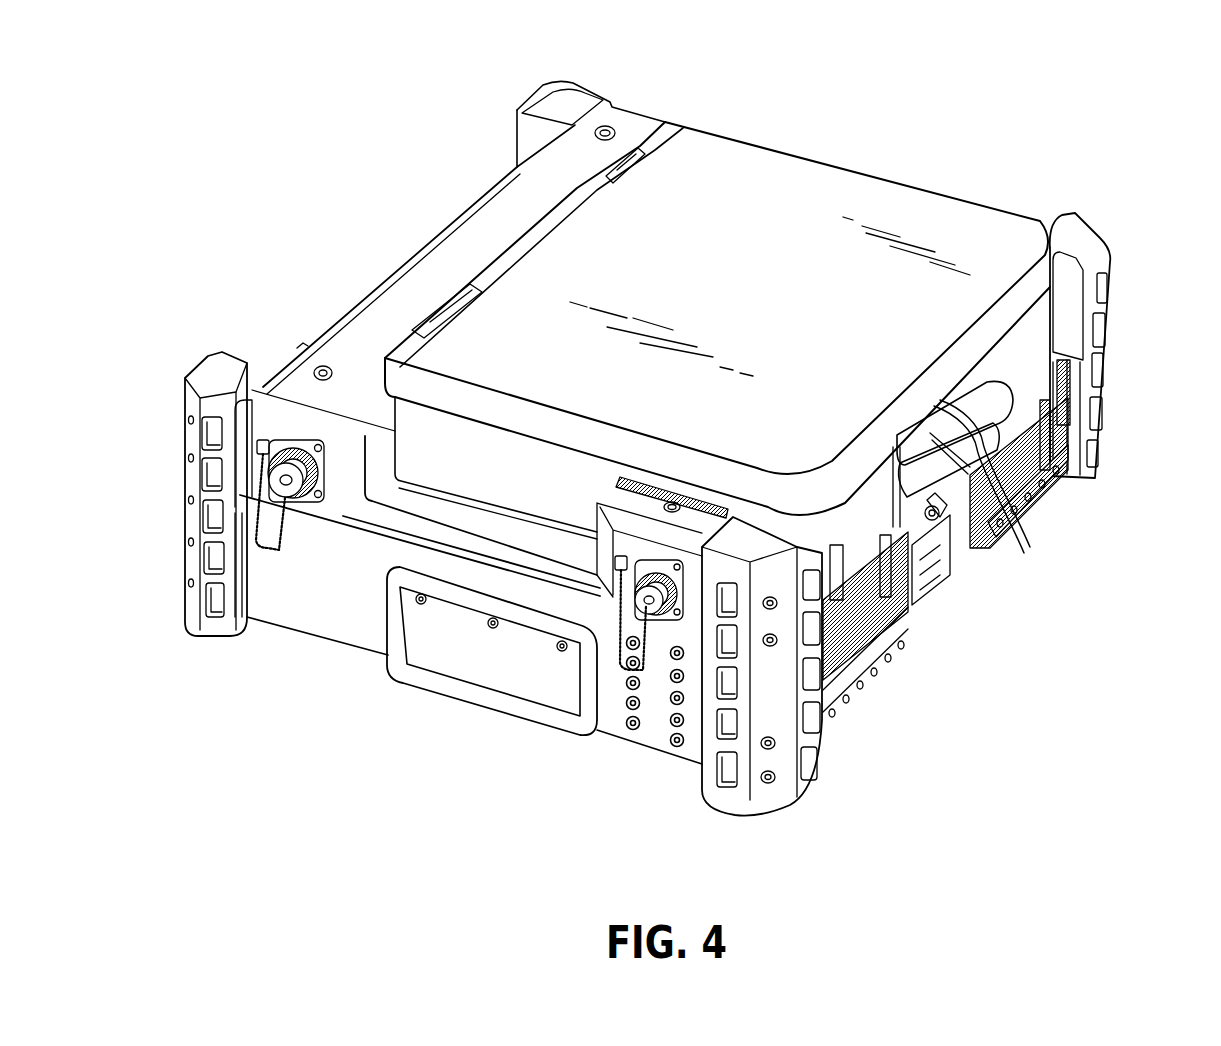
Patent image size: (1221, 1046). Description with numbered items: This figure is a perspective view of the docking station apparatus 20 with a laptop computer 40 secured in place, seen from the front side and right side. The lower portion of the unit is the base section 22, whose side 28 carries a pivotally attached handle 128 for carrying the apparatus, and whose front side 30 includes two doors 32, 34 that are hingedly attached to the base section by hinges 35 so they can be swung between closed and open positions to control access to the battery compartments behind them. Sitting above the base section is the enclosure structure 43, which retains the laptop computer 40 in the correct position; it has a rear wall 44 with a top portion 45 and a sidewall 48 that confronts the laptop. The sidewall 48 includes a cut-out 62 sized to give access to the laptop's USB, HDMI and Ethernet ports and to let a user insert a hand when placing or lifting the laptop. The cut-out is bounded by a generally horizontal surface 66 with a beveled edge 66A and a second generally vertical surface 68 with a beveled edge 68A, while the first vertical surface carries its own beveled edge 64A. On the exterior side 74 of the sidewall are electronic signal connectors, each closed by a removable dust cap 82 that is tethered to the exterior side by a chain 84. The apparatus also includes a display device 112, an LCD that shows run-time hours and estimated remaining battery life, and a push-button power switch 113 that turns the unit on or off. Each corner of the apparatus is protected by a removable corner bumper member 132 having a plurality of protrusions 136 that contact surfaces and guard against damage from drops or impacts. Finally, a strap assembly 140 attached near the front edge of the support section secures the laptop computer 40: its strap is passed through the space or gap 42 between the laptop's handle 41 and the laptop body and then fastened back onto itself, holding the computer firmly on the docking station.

The docking station apparatus 20 is at (372, 178).
The base section 22 is at (343, 633).
The side 28 is at (277, 587).
The front side 30 is at (923, 537).
The door 32 is at (830, 687).
The door 34 is at (1033, 463).
The hinges 35 is at (870, 673).
The laptop computer 40 is at (800, 167).
The handle 41 is at (1003, 373).
The space or gap 42 is at (940, 520).
The enclosure structure 43 is at (483, 220).
The rear wall 44 is at (400, 290).
The top portion 45 is at (433, 273).
The sidewall 48 is at (346, 517).
The cut-out 62 is at (403, 510).
The beveled edge 64A is at (593, 530).
The generally horizontal surface 66 is at (573, 547).
The beveled edge 66A is at (450, 543).
The second generally vertical surface 68 is at (383, 447).
The beveled edge 68A is at (323, 366).
The exterior side 74 is at (695, 595).
The dust cap 82 is at (283, 478).
The chain 84 is at (278, 562).
The display device 112 is at (920, 560).
The power switch 113 is at (945, 525).
The handle 128 is at (477, 703).
The corner bumper member 132 is at (583, 93).
The protrusions 136 is at (205, 518).
The strap assembly 140 is at (993, 420).